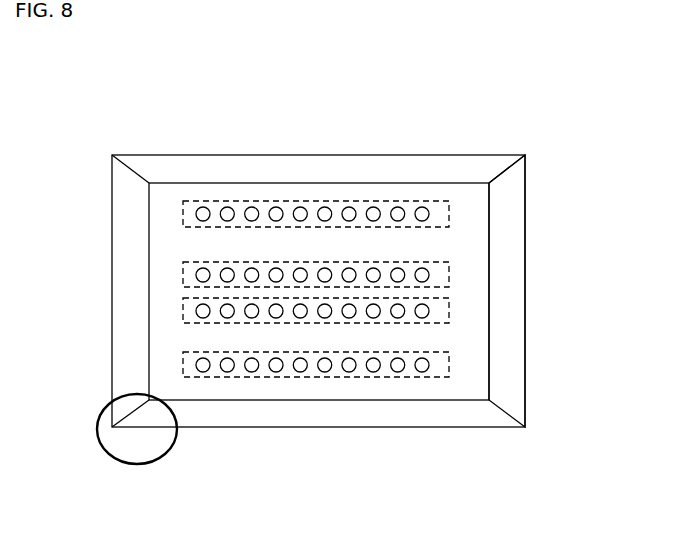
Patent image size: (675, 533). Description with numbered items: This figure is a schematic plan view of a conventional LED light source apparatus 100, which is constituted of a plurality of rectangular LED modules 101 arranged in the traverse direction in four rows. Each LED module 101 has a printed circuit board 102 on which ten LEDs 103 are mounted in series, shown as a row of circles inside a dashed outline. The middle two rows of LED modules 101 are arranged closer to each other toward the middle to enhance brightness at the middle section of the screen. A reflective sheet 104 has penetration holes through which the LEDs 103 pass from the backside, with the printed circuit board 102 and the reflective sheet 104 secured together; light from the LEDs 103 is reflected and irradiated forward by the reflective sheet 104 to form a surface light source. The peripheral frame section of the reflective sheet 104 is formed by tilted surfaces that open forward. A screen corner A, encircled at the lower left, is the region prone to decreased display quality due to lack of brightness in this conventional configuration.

The LED light source apparatus 100 is at (371, 255).
The LED module 101 is at (258, 296).
The printed circuit board 102 is at (347, 203).
The LED 103 is at (248, 203).
The reflective sheet 104 is at (527, 301).
The screen corner A is at (170, 462).